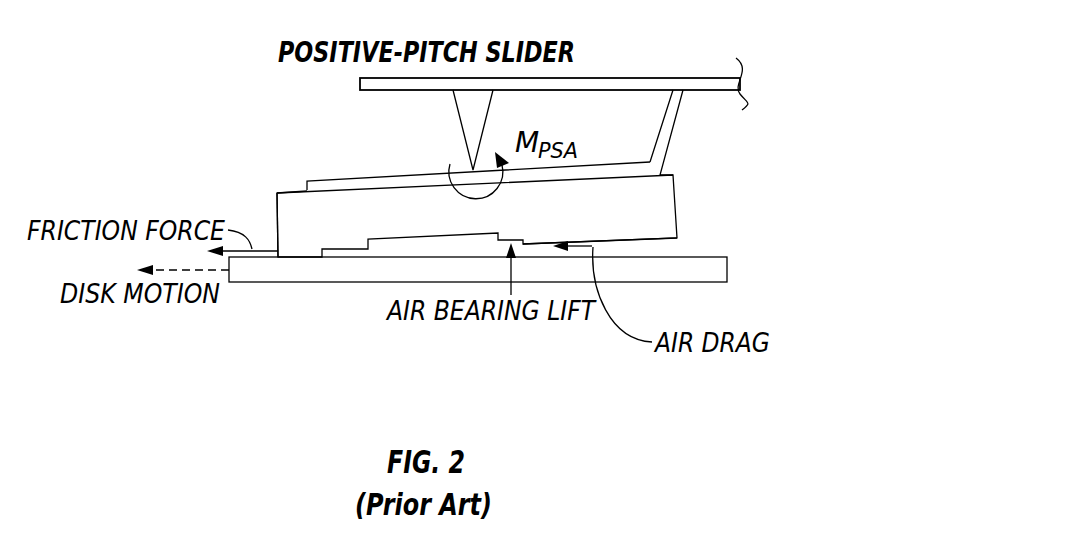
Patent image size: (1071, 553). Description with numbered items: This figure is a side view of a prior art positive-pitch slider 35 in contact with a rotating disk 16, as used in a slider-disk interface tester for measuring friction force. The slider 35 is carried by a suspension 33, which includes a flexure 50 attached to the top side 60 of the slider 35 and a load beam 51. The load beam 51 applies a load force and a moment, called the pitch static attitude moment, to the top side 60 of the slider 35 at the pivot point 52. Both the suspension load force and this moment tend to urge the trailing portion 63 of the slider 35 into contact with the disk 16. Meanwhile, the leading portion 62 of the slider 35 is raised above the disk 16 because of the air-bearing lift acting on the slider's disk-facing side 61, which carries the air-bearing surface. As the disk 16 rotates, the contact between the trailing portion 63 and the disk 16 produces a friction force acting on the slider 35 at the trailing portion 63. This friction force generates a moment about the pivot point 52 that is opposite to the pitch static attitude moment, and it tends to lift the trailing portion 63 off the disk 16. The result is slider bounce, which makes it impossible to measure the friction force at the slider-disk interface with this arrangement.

The disk 16 is at (706, 284).
The suspension 33 is at (715, 73).
The positive-pitch slider 35 is at (415, 188).
The flexure 50 is at (668, 125).
The load beam 51 is at (598, 78).
The pivot point 52 is at (463, 166).
The top side 60 is at (295, 190).
The disk-facing side 61 is at (613, 243).
The leading portion 62 is at (665, 218).
The trailing portion 63 is at (288, 220).